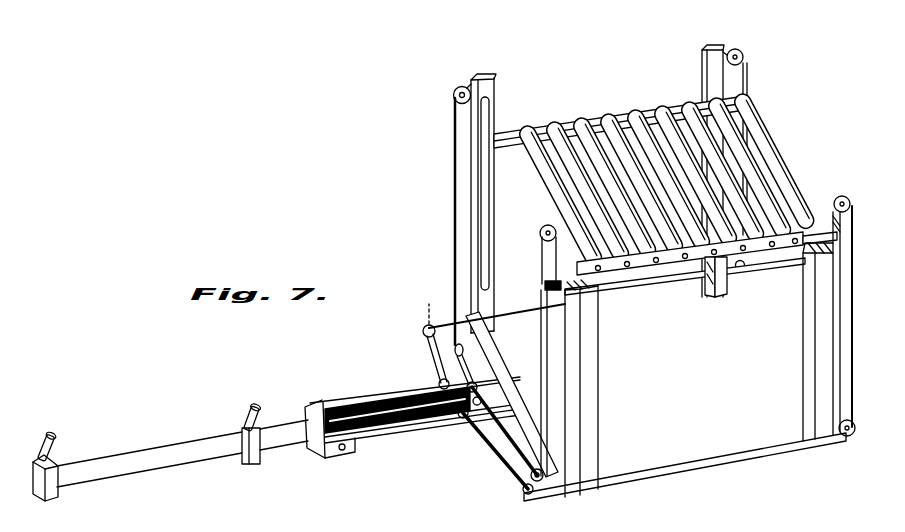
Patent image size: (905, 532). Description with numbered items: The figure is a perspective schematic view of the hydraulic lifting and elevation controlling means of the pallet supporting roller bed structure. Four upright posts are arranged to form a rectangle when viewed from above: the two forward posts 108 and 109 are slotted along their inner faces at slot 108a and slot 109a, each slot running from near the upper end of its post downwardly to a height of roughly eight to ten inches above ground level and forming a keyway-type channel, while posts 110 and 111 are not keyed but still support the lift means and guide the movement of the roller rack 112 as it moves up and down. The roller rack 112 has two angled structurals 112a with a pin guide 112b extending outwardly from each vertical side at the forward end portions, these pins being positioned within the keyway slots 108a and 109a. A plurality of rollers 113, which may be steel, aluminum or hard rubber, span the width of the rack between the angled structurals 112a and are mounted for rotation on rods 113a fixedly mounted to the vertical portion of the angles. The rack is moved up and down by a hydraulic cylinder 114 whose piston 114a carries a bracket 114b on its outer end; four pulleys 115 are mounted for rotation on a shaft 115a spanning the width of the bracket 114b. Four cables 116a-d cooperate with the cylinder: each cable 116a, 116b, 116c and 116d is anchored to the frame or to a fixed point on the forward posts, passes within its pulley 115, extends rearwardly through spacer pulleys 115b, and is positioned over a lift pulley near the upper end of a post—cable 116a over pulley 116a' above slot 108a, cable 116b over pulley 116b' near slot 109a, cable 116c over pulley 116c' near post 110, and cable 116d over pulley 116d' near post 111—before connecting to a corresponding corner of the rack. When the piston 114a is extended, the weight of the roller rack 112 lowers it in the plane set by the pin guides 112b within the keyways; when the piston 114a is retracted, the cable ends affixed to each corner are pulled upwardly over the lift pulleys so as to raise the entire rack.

The forward post 108 is at (489, 80).
The slot 108a is at (489, 104).
The forward post 109 is at (598, 441).
The slot 109a is at (594, 312).
The post 110 is at (716, 46).
The post 111 is at (806, 372).
The roller rack 112 is at (634, 112).
The angled structural 112a is at (560, 134).
The pin guide 112b is at (491, 136).
The roller 113 is at (668, 118).
The rod 113a is at (666, 280).
The hydraulic cylinder 114 is at (108, 468).
The piston 114a is at (265, 432).
The bracket 114b is at (324, 462).
The pulley 115 is at (340, 412).
The shaft 115a is at (345, 452).
The spacer pulley 115b is at (454, 351).
The cable 116a is at (425, 221).
The lift pulley 116a' is at (459, 76).
The cables 116a-d is at (500, 376).
The cable 116b is at (596, 383).
The lift pulley 116b' is at (529, 246).
The cable 116c is at (776, 149).
The lift pulley 116c' is at (762, 54).
The cable 116d is at (844, 341).
The lift pulley 116d' is at (844, 289).